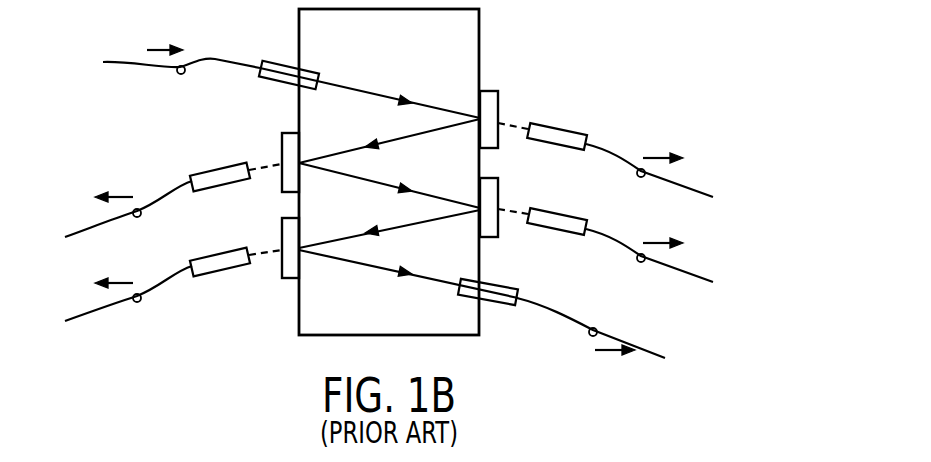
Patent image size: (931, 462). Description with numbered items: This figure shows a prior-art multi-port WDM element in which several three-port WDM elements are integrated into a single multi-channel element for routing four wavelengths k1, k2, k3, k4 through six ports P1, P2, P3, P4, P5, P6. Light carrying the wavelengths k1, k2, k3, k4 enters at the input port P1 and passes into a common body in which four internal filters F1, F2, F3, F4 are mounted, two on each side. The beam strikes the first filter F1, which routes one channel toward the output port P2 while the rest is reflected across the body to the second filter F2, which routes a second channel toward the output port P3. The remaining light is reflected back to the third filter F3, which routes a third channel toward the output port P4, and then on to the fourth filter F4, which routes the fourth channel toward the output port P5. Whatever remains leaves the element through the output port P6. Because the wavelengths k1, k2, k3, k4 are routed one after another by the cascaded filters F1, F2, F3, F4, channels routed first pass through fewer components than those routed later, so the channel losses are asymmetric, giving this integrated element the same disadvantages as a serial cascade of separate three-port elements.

The internal filter F1 is at (500, 91).
The internal filter F2 is at (282, 135).
The internal filter F3 is at (498, 186).
The internal filter F4 is at (282, 238).
The port P1 is at (128, 61).
The port P2 is at (680, 160).
The port P3 is at (167, 200).
The port P4 is at (681, 245).
The port P5 is at (167, 284).
The port P6 is at (649, 350).
The wavelength k1 is at (663, 143).
The wavelength k2 is at (114, 184).
The wavelength k3 is at (663, 228).
The wavelength k4 is at (114, 269).